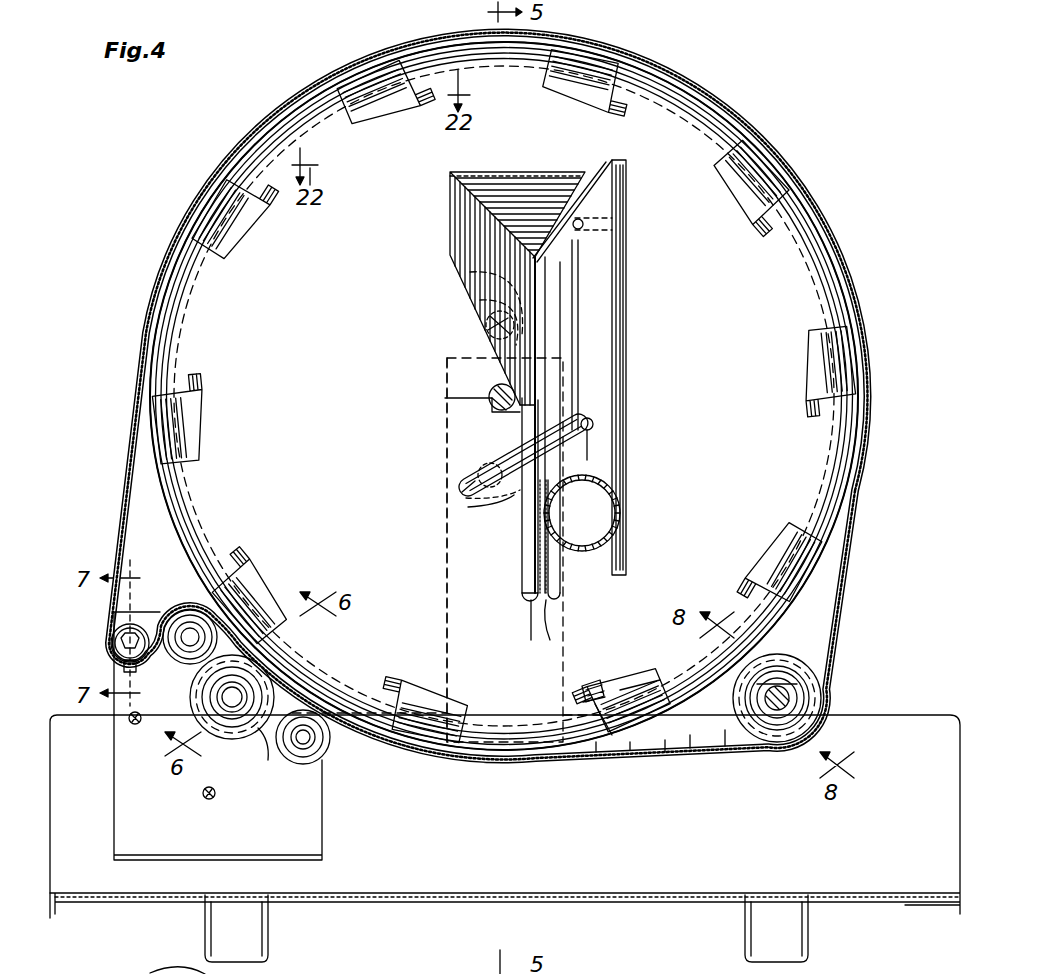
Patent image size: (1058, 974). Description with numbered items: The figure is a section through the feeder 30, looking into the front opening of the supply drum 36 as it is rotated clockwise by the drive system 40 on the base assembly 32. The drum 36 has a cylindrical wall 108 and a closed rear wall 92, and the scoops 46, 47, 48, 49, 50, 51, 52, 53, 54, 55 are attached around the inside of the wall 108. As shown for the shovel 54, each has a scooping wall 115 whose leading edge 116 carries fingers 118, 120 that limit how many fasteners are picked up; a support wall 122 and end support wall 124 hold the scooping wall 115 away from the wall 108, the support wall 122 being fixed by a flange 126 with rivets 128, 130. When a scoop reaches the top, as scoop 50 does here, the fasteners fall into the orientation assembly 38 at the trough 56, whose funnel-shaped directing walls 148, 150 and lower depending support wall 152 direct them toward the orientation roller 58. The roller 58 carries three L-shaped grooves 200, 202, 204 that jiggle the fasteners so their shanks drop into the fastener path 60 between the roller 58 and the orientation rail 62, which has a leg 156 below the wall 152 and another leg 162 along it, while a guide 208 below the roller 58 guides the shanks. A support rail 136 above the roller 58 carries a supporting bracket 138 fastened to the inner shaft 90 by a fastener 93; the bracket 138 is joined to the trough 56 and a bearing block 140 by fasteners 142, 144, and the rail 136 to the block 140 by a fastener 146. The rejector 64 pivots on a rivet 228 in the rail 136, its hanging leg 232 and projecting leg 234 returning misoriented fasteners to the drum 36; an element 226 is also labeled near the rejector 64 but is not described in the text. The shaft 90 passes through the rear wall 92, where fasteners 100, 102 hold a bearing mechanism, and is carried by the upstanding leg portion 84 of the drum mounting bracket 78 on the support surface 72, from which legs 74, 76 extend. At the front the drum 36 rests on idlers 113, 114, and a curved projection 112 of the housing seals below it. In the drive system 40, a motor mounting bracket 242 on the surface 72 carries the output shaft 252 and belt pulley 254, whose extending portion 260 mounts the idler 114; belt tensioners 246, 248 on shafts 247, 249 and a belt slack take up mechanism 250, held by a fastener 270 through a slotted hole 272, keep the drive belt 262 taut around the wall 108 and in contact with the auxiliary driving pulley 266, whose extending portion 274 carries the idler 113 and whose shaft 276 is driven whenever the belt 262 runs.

The feeder 30 is at (830, 94).
The base assembly 32 is at (942, 714).
The supply drum 36 is at (830, 620).
The orientation assembly 38 is at (662, 310).
The drive system 40 is at (132, 810).
The scoop 46 is at (456, 692).
The scoop 47 is at (278, 592).
The scoop 48 is at (206, 438).
The scoop 49 is at (238, 236).
The scoop 50 is at (384, 114).
The scoop 51 is at (578, 90).
The scoop 52 is at (734, 188).
The scoop 53 is at (804, 358).
The shovel 54 is at (768, 566).
The scoop 55 is at (620, 683).
The trough 56 is at (446, 226).
The orientation roller 58 is at (626, 492).
The fastener path 60 is at (546, 604).
The orientation rail 62 is at (530, 600).
The rejector 64 is at (460, 486).
The support surface 72 is at (898, 903).
The leg 74 is at (270, 944).
The leg 76 is at (745, 944).
The drum mounting bracket 78 is at (447, 616).
The upstanding leg portion 84 is at (447, 574).
The inner shaft 90 is at (486, 392).
The rear wall 92 is at (182, 315).
The fastener 93 is at (490, 400).
The fastener 100 is at (490, 318).
The fastener 102 is at (468, 508).
The cylindrical wall 108 is at (852, 492).
The curved projection 112 is at (170, 970).
The idler 113 is at (818, 724).
The idler 114 is at (276, 736).
The scooping wall 115 is at (626, 690).
The leading edge 116 is at (600, 718).
The finger 118 is at (588, 692).
The finger 120 is at (590, 700).
The support wall 122 is at (630, 752).
The end support wall 124 is at (597, 754).
The flange 126 is at (692, 746).
The rivet 128 is at (726, 746).
The rivet 130 is at (666, 754).
The support rail 136 is at (610, 198).
The supporting bracket 138 is at (468, 372).
The bearing block 140 is at (628, 240).
The fastener 142 is at (478, 270).
The fastener 144 is at (480, 296).
The fastener 146 is at (592, 176).
The directing wall 148 is at (454, 197).
The directing wall 150 is at (535, 180).
The lower depending support wall 152 is at (520, 418).
The leg 156 is at (524, 580).
The leg 162 is at (526, 440).
The groove 200 is at (592, 460).
The groove 202 is at (616, 536).
The groove 204 is at (540, 535).
The guide 208 is at (560, 572).
The lever 226 is at (596, 446).
The rivet 228 is at (600, 420).
The leg 232 is at (500, 496).
The projecting leg 234 is at (476, 466).
The motor mounting bracket 242 is at (318, 800).
The belt tensioner 246 is at (322, 732).
The shaft 247 is at (306, 748).
The belt tensioner 248 is at (182, 660).
The shaft 249 is at (190, 628).
The belt slack take up mechanism 250 is at (118, 632).
The output shaft 252 is at (236, 708).
The belt pulley 254 is at (306, 688).
The extending portion 260 is at (216, 700).
The drive belt 262 is at (492, 768).
The auxiliary driving pulley 266 is at (810, 666).
The fastener 270 is at (119, 646).
The slotted hole 272 is at (122, 668).
The extending portion 274 is at (800, 698).
The shaft 276 is at (780, 726).